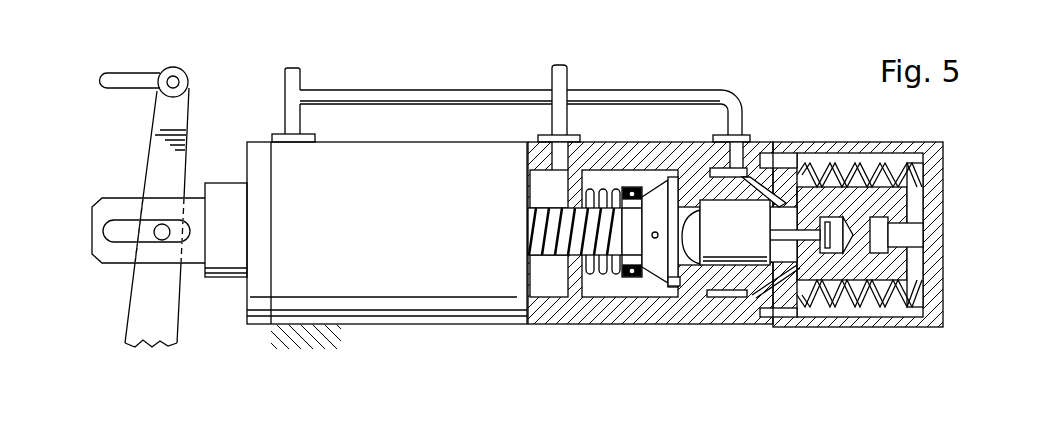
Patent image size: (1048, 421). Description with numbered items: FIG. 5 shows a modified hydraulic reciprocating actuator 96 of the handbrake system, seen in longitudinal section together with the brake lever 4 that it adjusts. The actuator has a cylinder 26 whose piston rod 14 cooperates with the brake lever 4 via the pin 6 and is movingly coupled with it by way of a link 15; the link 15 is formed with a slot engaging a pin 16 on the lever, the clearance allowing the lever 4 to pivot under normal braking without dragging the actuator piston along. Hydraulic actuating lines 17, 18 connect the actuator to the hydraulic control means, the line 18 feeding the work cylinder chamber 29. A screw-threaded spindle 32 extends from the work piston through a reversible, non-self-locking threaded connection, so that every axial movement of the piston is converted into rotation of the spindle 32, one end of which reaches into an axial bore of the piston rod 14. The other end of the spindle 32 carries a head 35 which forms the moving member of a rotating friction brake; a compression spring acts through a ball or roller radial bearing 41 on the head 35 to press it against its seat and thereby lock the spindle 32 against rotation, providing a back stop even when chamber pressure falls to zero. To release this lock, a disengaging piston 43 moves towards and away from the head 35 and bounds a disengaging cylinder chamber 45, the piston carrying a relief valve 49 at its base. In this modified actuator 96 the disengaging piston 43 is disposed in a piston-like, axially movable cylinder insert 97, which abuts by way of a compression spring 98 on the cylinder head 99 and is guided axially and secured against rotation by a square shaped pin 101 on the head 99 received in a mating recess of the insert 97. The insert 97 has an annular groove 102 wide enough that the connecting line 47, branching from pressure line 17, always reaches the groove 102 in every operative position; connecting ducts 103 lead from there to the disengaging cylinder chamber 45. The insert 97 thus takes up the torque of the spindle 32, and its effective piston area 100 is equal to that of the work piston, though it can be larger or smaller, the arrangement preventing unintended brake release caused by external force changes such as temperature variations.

The brake lever 4 is at (137, 326).
The pin 6 is at (133, 89).
The piston rod 14 is at (223, 269).
The link 15 is at (120, 256).
The pin 16 is at (162, 224).
The actuating line 17 is at (300, 80).
The actuating line 18 is at (560, 80).
The cylinder 26 is at (398, 306).
The work cylinder chamber 29 is at (556, 291).
The screw-threaded spindle 32 is at (553, 256).
The head 35 is at (668, 273).
The radial bearing 41 is at (630, 278).
The disengaging piston 43 is at (726, 232).
The disengaging cylinder chamber 45 is at (777, 218).
The connecting line 47 is at (730, 104).
The relief valve 49 is at (789, 214).
The reciprocating actuator 96 is at (981, 175).
The cylinder insert 97 is at (787, 300).
The compression spring 98 is at (897, 300).
The cylinder head 99 is at (933, 280).
The effective piston area 100 is at (673, 287).
The square shaped pin 101 is at (915, 223).
The annular groove 102 is at (728, 298).
The connecting ducts 103 is at (767, 170).